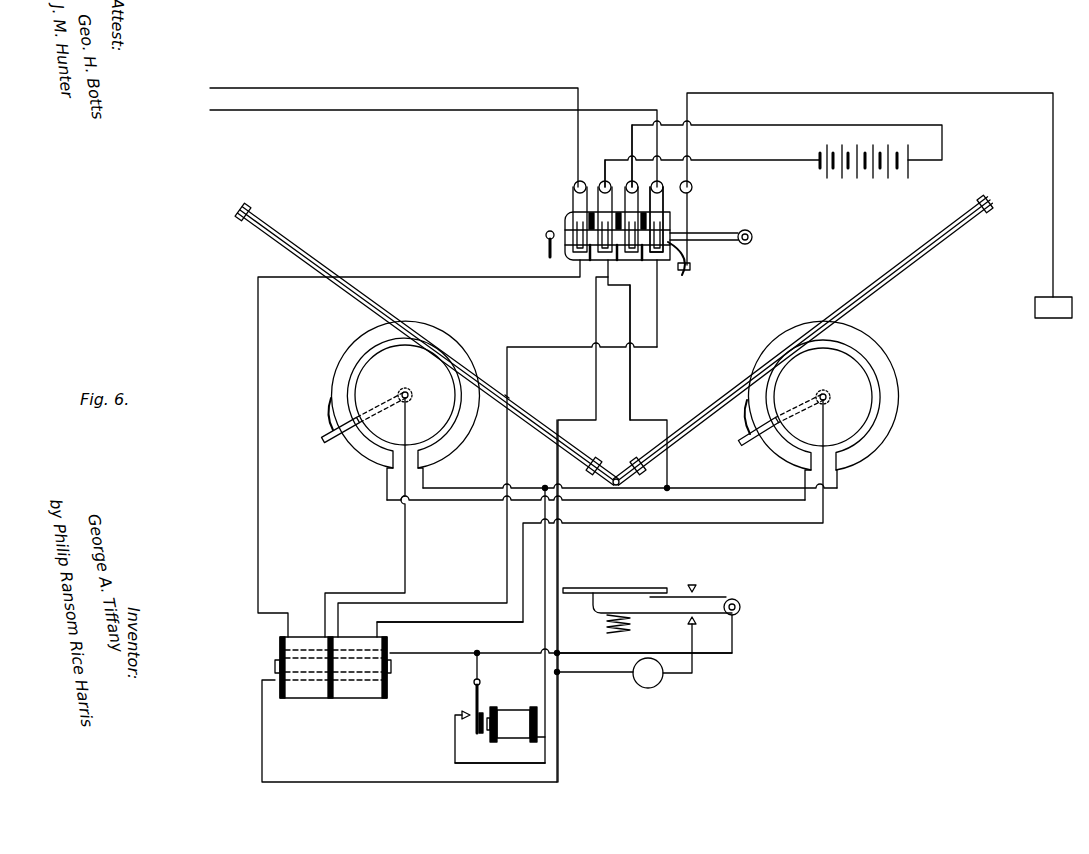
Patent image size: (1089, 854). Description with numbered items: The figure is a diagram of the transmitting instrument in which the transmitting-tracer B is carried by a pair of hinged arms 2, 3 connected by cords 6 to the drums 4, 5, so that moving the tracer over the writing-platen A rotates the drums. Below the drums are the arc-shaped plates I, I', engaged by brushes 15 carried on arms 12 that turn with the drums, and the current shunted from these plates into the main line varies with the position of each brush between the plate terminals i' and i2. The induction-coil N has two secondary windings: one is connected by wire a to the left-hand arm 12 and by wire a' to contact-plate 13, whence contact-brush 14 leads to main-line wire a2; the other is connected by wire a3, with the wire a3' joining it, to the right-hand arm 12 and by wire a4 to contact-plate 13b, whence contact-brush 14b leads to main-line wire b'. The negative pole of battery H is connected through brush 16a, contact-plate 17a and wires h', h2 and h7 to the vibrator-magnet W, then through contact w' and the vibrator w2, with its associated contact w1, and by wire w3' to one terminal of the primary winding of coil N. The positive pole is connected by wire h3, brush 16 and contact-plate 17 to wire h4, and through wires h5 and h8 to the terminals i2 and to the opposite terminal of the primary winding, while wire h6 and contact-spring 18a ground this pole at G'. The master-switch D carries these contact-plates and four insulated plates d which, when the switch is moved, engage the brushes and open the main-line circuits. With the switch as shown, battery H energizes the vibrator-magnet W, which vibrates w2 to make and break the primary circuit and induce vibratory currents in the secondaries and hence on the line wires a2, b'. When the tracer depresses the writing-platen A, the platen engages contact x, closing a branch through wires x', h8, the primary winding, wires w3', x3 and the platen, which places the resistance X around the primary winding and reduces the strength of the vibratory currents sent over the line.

The main-line wire a2 is at (540, 84).
The main-line wire b' is at (433, 148).
The wire h3 is at (830, 116).
The wire h' is at (712, 171).
The wire h6 is at (866, 88).
The ground G' is at (1037, 310).
The battery H is at (864, 172).
The insulated plates d is at (563, 216).
The contact-brush 14 is at (572, 198).
The contact-brush 14b is at (664, 198).
The contact-brush 16a is at (600, 180).
The contact-brush 16 is at (634, 196).
The contact-spring 18a is at (692, 268).
The master-switch D is at (725, 247).
The contact-plate 13b is at (681, 270).
The contact-plate 13 is at (568, 254).
The contact-plate 17a is at (592, 268).
The contact-plate 17 is at (646, 303).
The wire h4 is at (594, 316).
The wire a4 is at (648, 346).
The arc-shaped plate I is at (392, 394).
The drum 4 is at (405, 395).
The arm 12 is at (362, 431).
The brush 15 is at (327, 410).
The terminal i2 is at (386, 468).
The terminal i' is at (433, 477).
The wire a is at (365, 517).
The cords 6 is at (360, 300).
The arc-shaped plate I' is at (831, 395).
The drum 5 is at (823, 397).
The wire a3 is at (600, 518).
The hinged arm 3 is at (722, 408).
The transmitting-tracer B is at (618, 477).
The hinged arm 2 is at (554, 426).
The wire h2 is at (697, 488).
The wire h5 is at (485, 503).
The wire a' is at (401, 448).
The wire a3' is at (450, 629).
The wire h7 is at (544, 638).
The induction-coil N is at (278, 643).
The wire h8 is at (262, 738).
The wire w3' is at (561, 645).
The vibrator w2 is at (482, 672).
The contact w1 is at (462, 713).
The vibrator-magnet W is at (512, 724).
The contact w' is at (500, 756).
The writing-platen A is at (651, 602).
The contact x is at (680, 619).
The wire x3 is at (605, 660).
The wire x' is at (594, 682).
The resistance X is at (650, 686).